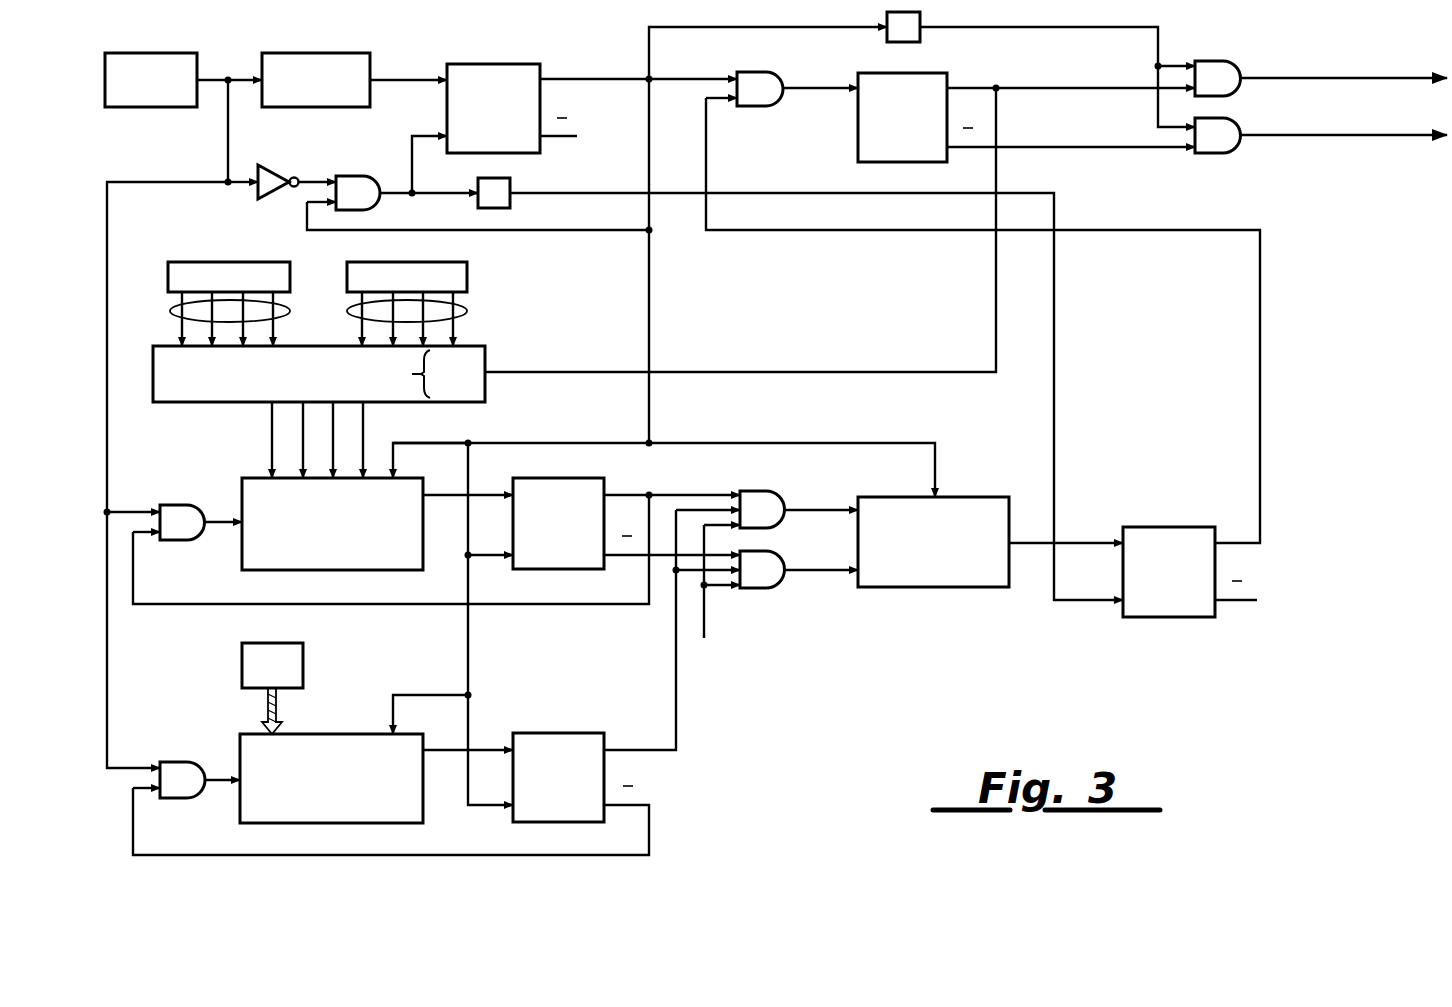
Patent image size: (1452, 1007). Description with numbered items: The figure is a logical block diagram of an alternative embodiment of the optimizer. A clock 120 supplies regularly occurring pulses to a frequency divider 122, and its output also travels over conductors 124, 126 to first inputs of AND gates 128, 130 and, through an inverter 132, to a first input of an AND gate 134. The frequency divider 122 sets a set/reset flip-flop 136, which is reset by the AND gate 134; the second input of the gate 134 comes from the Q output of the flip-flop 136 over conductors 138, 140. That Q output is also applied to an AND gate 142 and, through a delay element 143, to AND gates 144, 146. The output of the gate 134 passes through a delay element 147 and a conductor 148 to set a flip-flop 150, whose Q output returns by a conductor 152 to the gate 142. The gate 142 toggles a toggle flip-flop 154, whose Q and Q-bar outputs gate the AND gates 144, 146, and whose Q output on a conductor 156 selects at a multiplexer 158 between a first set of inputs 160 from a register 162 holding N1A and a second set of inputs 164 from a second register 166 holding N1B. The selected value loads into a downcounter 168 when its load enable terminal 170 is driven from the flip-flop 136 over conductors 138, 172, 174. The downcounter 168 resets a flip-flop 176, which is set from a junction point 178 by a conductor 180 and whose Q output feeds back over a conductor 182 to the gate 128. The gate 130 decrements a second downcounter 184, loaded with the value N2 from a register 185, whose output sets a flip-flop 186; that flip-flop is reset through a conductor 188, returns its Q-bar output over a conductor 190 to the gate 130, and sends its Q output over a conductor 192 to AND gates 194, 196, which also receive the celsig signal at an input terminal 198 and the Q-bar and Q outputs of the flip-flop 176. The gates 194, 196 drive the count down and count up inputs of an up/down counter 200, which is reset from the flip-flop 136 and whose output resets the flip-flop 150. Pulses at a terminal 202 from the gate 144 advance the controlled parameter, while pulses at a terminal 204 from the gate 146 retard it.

The clock 120 is at (158, 54).
The frequency divider 122 is at (322, 54).
The conductor 124 is at (228, 143).
The conductor 126 is at (107, 437).
The AND gate 128 is at (172, 505).
The AND gate 130 is at (172, 762).
The inverter 132 is at (272, 166).
The AND gate 134 is at (352, 176).
The set/reset type flip-flop 136 is at (488, 64).
The conductor 138 is at (649, 157).
The conductor 140 is at (560, 230).
The AND gate 142 is at (758, 72).
The delay element 143 is at (918, 15).
The AND gate 144 is at (1228, 61).
The AND gate 146 is at (1228, 118).
The delay element 147 is at (510, 183).
The conductor 148 is at (760, 193).
The set/reset type flip-flop 150 is at (1152, 527).
The conductor 152 is at (1183, 233).
The toggle type flip-flop 154 is at (920, 73).
The conductor 156 is at (996, 300).
The multiplexer 158 is at (485, 347).
The first set of inputs 160 is at (178, 316).
The register 162 is at (215, 262).
The second set of inputs 164 is at (467, 311).
The second register 166 is at (462, 250).
The downcounter 168 is at (252, 478).
The load enable terminal 170 is at (398, 445).
The conductor 172 is at (649, 300).
The conductor 174 is at (555, 443).
The set/reset type flip-flop 176 is at (555, 478).
The junction point 178 is at (470, 443).
The conductor 180 is at (465, 535).
The conductor 182 is at (550, 605).
The second downcounter 184 is at (338, 734).
The register 185 is at (272, 643).
The set/reset type flip-flop 186 is at (567, 733).
The conductor 188 is at (470, 718).
The conductor 190 is at (440, 858).
The conductor 192 is at (676, 725).
The AND gate 194 is at (762, 551).
The AND gate 196 is at (760, 491).
The input terminal 198 is at (704, 615).
The up/down counter 200 is at (925, 587).
The terminal 202 is at (1360, 80).
The terminal 204 is at (1360, 137).